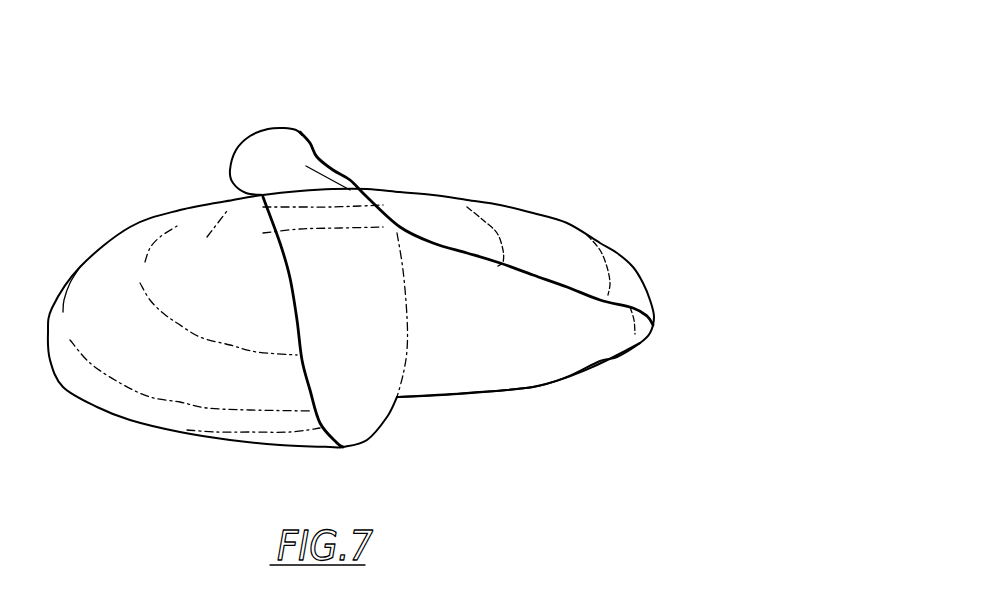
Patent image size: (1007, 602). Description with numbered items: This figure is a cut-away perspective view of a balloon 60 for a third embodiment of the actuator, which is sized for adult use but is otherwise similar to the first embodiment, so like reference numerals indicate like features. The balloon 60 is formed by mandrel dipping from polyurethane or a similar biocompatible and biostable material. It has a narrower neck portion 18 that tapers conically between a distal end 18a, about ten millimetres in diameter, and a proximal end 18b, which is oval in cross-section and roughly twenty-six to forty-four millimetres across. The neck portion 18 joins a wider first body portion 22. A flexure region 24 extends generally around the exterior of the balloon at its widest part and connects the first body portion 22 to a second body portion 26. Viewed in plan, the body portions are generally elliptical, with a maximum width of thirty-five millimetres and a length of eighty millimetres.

The balloon 60 is at (400, 245).
The neck portion 18 is at (350, 192).
The distal end 18a is at (302, 130).
The proximal end 18b is at (467, 216).
The first body portion 22 is at (582, 247).
The flexure region 24 is at (637, 281).
The second body portion 26 is at (533, 387).